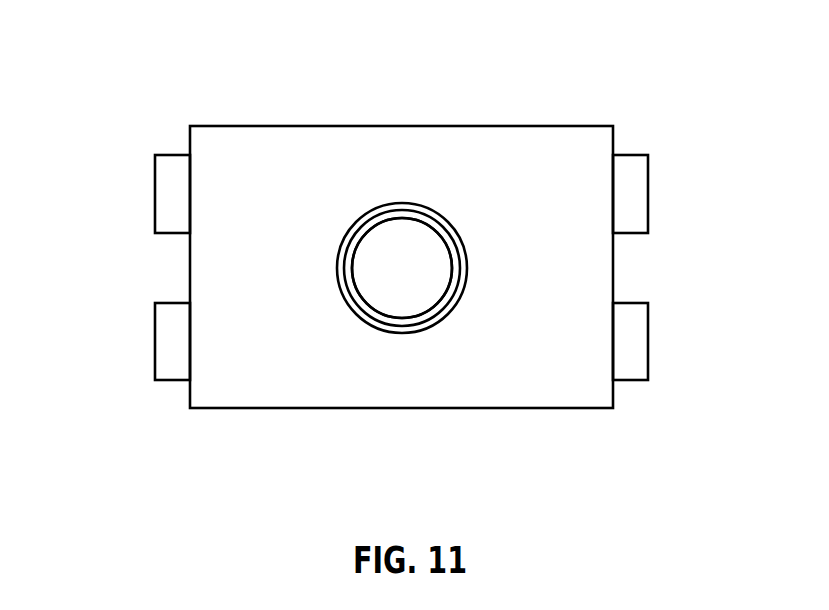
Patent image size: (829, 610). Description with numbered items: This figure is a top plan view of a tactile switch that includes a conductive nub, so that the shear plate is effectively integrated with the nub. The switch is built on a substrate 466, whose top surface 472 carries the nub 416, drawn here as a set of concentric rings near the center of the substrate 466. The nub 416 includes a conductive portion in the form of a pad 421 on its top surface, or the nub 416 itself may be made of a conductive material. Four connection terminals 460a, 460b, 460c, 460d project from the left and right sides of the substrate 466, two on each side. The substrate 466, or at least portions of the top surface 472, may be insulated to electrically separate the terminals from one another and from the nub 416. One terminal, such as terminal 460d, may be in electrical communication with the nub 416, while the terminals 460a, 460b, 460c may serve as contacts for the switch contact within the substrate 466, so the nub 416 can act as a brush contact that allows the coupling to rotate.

The nub 416 is at (410, 238).
The pad 421 is at (398, 278).
The substrate 466 is at (600, 138).
The top surface 472 is at (543, 155).
The connection terminal 460a is at (648, 342).
The connection terminal 460b is at (648, 182).
The connection terminal 460c is at (155, 183).
The connection terminal 460d is at (155, 343).